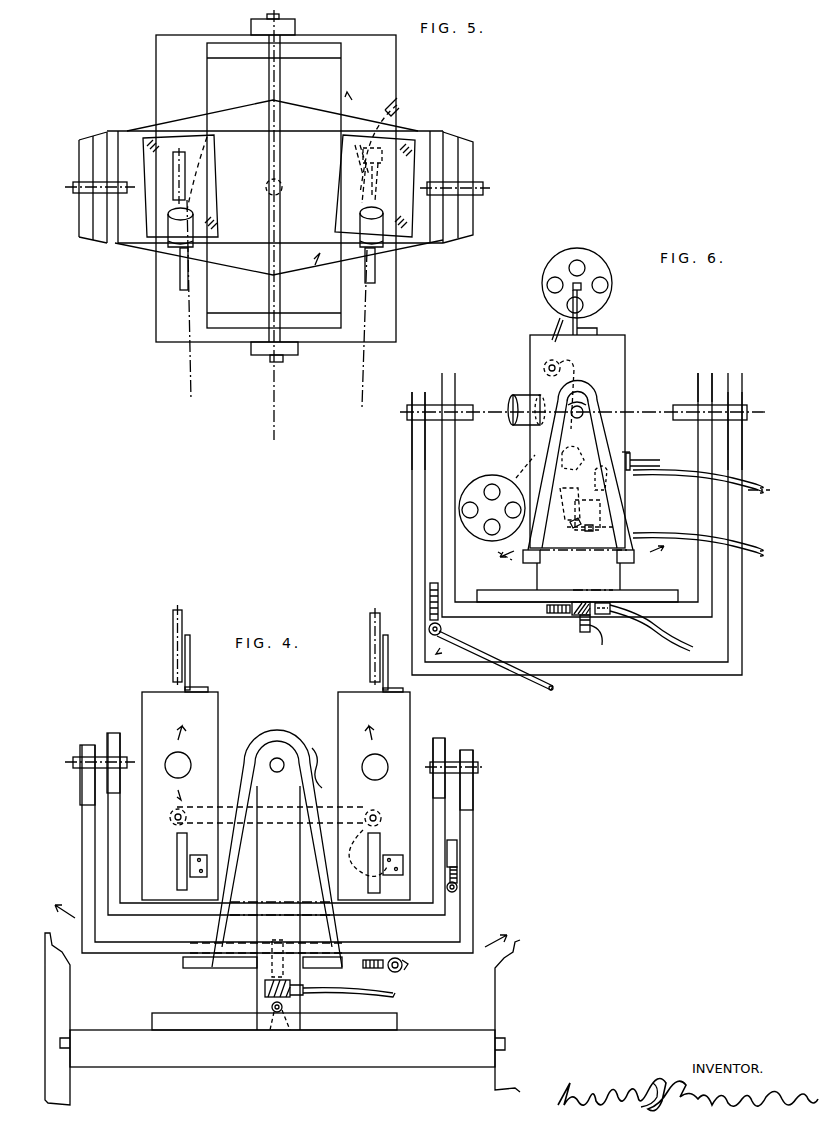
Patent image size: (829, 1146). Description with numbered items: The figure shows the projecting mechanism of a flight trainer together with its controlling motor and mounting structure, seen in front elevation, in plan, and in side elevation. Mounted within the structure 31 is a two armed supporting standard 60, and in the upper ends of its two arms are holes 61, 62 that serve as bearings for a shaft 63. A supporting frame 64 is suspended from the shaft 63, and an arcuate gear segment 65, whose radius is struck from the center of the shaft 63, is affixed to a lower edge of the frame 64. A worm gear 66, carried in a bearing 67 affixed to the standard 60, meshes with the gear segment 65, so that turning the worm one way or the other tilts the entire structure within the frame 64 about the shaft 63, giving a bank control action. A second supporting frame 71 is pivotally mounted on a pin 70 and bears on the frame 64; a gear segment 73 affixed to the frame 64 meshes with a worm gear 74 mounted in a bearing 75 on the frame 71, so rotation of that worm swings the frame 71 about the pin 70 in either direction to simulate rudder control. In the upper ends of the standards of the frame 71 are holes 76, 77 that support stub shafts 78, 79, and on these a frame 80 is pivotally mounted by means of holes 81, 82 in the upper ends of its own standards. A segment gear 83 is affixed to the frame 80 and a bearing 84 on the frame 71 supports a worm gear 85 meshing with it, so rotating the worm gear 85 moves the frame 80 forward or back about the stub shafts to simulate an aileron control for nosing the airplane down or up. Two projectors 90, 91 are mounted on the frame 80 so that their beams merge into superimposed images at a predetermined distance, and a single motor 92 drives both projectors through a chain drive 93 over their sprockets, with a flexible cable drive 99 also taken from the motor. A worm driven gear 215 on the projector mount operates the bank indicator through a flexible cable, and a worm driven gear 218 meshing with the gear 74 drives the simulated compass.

In FIG. 4, the structure 31 is at (343, 1067).
In FIG. 5, the two armed supporting standard 60 is at (243, 340).
In FIG. 6, the two armed supporting standard 60 is at (744, 676).
In FIG. 4, the two armed supporting standard 60 is at (219, 1018).
In FIG. 6, the hole 61 is at (410, 432).
In FIG. 6, the hole 62 is at (736, 402).
In FIG. 5, the shaft 63 is at (267, 15).
In FIG. 6, the shaft 63 is at (462, 409).
In FIG. 4, the shaft 63 is at (277, 758).
In FIG. 5, the supporting frame 64 is at (316, 325).
In FIG. 6, the supporting frame 64 is at (701, 384).
In FIG. 4, the supporting frame 64 is at (277, 848).
In FIG. 6, the arcuate gear segment 65 is at (428, 590).
In FIG. 4, the arcuate gear segment 65 is at (246, 974).
In FIG. 6, the worm gear 66 is at (429, 629).
In FIG. 4, the worm gear 66 is at (291, 1016).
In FIG. 6, the bearing 67 is at (420, 646).
In FIG. 4, the bearing 67 is at (305, 995).
In FIG. 5, the pin 70 is at (283, 185).
In FIG. 6, the pin 70 is at (577, 624).
In FIG. 4, the pin 70 is at (280, 938).
In FIG. 5, the supporting frame 71 is at (208, 118).
In FIG. 6, the supporting frame 71 is at (518, 581).
In FIG. 4, the supporting frame 71 is at (470, 912).
In FIG. 6, the gear segment 73 is at (545, 612).
In FIG. 4, the gear segment 73 is at (373, 958).
In FIG. 6, the worm gear 74 is at (578, 601).
In FIG. 4, the worm gear 74 is at (404, 956).
In FIG. 6, the bearing 75 is at (606, 601).
In FIG. 4, the bearing 75 is at (406, 967).
In FIG. 4, the hole 76 is at (86, 770).
In FIG. 4, the hole 77 is at (469, 774).
In FIG. 5, the stub shaft 78 is at (102, 192).
In FIG. 4, the stub shaft 78 is at (100, 758).
In FIG. 5, the stub shaft 79 is at (448, 183).
In FIG. 6, the stub shaft 79 is at (580, 387).
In FIG. 4, the stub shaft 79 is at (445, 759).
In FIG. 5, the frame 80 is at (131, 248).
In FIG. 6, the frame 80 is at (630, 565).
In FIG. 4, the frame 80 is at (182, 916).
In FIG. 5, the hole 81 is at (111, 183).
In FIG. 4, the hole 81 is at (114, 764).
In FIG. 5, the hole 82 is at (437, 185).
In FIG. 4, the hole 82 is at (439, 766).
In FIG. 6, the segment gear 83 is at (568, 483).
In FIG. 4, the segment gear 83 is at (457, 848).
In FIG. 6, the bearing 84 is at (612, 505).
In FIG. 4, the bearing 84 is at (458, 878).
In FIG. 6, the worm gear 85 is at (572, 534).
In FIG. 4, the worm gear 85 is at (447, 887).
In FIG. 5, the projector 90 is at (160, 233).
In FIG. 4, the projector 90 is at (156, 691).
In FIG. 5, the projector 91 is at (400, 230).
In FIG. 4, the projector 91 is at (369, 691).
In FIG. 6, the motor 92 is at (627, 456).
In FIG. 4, the motor 92 is at (390, 824).
In FIG. 4, the chain drive 93 is at (366, 810).
In FIG. 6, the flexible cable drive 99 is at (751, 480).
In FIG. 4, the worm driven gear 215 is at (271, 1017).
In FIG. 6, the worm driven gear 218 is at (588, 628).